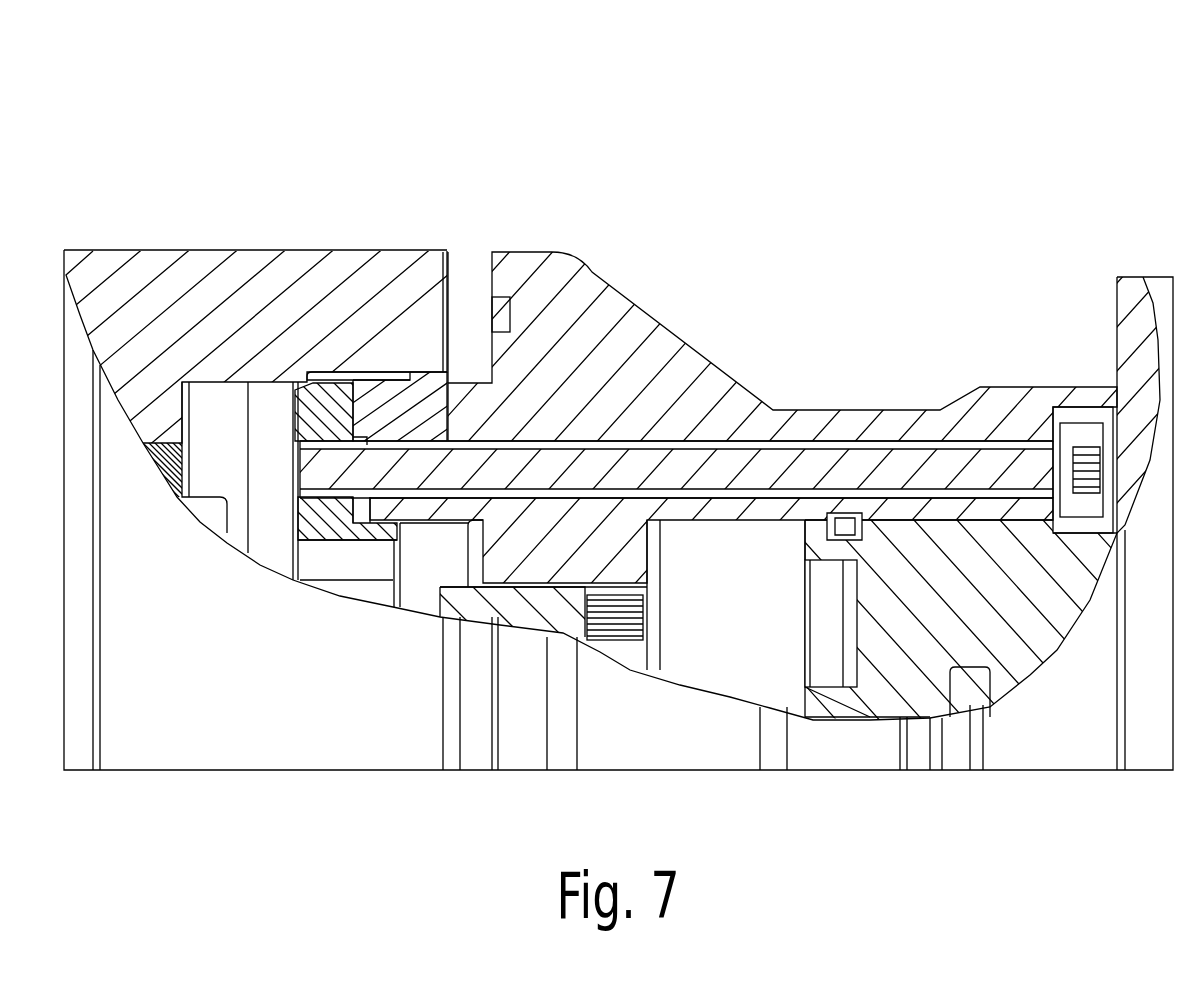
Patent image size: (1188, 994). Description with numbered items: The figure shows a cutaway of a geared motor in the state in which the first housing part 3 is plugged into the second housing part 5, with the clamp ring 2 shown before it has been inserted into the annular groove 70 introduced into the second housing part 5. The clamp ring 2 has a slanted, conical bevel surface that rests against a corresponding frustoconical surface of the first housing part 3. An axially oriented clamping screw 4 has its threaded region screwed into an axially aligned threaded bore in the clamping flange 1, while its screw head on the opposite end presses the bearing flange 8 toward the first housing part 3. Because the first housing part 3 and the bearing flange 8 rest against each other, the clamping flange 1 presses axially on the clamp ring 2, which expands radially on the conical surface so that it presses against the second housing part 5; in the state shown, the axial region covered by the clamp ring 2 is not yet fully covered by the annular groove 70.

The second housing part 5 is at (205, 340).
The clamping flange 1 is at (337, 513).
The annular groove 70 is at (334, 346).
The clamp ring 2 is at (382, 400).
The first housing part 3 is at (608, 353).
The clamping screw 4 is at (768, 463).
The bearing flange 8 is at (957, 547).